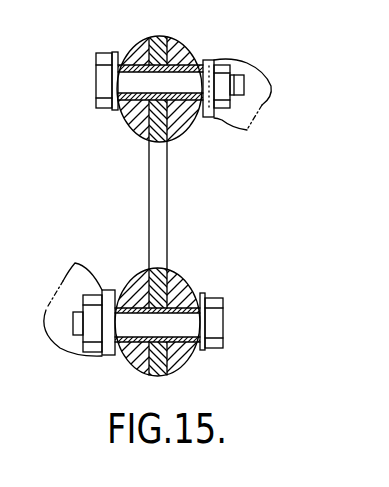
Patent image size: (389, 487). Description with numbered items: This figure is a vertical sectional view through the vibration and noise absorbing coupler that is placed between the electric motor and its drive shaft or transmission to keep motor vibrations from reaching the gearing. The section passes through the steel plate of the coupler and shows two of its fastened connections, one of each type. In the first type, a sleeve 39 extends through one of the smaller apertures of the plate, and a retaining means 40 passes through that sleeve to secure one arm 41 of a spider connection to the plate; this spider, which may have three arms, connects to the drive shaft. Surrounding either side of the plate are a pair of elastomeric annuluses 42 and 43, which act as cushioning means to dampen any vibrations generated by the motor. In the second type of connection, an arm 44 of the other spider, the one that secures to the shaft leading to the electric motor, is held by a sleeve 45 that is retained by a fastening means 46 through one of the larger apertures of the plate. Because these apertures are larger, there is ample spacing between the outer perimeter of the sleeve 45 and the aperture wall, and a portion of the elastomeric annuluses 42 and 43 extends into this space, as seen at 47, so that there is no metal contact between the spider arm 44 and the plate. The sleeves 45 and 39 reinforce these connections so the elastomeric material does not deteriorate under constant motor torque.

The sleeve 39 is at (175, 140).
The retaining means 40 is at (104, 109).
The spider connection arm 41 is at (256, 74).
The elastomeric annulus 42 is at (138, 42).
The elastomeric annulus 43 is at (182, 42).
The spider arm 44 is at (87, 258).
The sleeve 45 is at (194, 292).
The fastening means 46 is at (190, 328).
The elastomeric material extension 47 is at (177, 284).